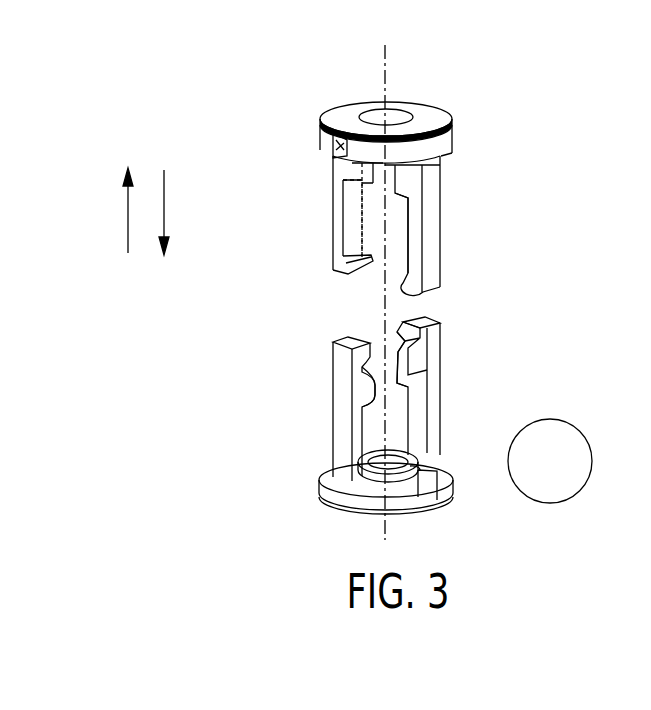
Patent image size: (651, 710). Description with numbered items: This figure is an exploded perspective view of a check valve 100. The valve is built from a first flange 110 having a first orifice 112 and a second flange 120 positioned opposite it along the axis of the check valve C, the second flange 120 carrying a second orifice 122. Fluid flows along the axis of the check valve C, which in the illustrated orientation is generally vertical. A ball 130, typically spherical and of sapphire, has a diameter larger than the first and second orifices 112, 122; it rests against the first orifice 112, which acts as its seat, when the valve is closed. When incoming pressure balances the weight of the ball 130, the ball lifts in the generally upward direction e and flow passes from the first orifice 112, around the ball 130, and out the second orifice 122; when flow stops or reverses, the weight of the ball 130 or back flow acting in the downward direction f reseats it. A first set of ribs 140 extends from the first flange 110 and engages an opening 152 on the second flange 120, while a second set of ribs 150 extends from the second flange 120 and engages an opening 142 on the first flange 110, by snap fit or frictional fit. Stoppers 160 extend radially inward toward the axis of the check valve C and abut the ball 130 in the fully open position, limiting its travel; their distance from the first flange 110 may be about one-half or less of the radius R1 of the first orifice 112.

The check valve 100 is at (482, 100).
The first flange 110 is at (327, 477).
The first orifice 112 is at (376, 466).
The second flange 120 is at (330, 115).
The second orifice 122 is at (400, 112).
The ball 130 is at (549, 419).
The first set of ribs 140 is at (345, 365).
The opening 142 is at (437, 487).
The second set of ribs 150 is at (345, 237).
The opening 152 is at (340, 148).
The stoppers 160 is at (343, 172).
The radius of the first orifice R1 is at (418, 467).
The axis of the check valve C is at (392, 535).
The upward direction e is at (107, 210).
The downward direction f is at (179, 212).